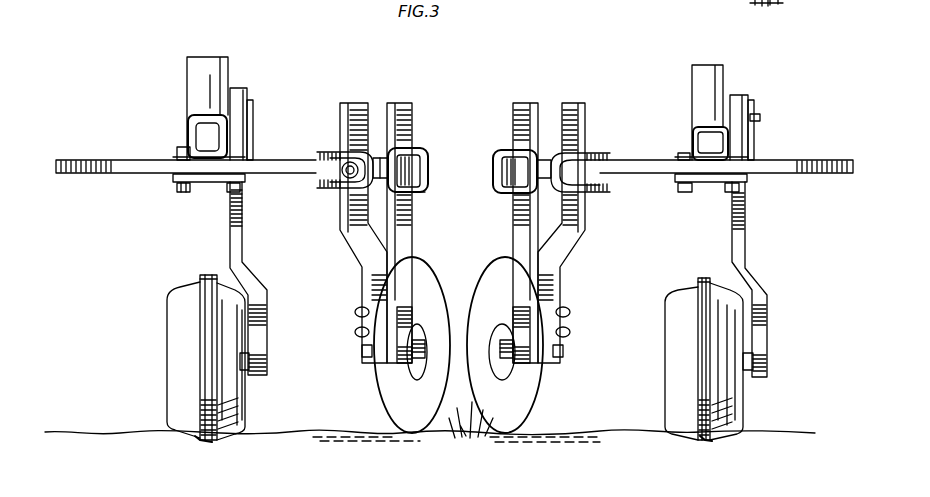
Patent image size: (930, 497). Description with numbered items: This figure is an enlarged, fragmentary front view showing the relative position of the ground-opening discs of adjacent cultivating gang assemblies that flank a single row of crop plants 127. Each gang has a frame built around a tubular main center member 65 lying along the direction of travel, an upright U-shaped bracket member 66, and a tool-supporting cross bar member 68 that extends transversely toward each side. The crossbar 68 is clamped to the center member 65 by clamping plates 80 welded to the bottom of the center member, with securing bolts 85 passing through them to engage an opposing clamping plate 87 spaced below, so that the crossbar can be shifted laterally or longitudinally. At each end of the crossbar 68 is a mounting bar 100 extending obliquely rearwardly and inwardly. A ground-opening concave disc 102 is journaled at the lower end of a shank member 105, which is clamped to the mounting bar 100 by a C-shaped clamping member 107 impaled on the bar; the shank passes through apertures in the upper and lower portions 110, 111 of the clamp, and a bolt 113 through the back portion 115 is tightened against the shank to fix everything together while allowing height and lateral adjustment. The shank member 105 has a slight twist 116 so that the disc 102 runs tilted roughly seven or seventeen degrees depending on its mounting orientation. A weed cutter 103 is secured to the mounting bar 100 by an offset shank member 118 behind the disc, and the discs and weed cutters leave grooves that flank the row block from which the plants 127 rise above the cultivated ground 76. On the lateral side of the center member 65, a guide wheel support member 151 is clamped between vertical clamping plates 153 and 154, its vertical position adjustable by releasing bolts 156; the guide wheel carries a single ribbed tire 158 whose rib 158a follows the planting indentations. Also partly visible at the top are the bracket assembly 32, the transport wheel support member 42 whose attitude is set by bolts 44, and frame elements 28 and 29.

The frame member 28 is at (242, 5).
The frame member 29 is at (138, 5).
The bracket assembly 32 is at (678, 1).
The wheel support member 42 is at (770, 6).
The bolts 44 is at (747, 3).
The main center member 65 is at (187, 128).
The U-shaped bracket member 66 is at (226, 67).
The tool-supporting cross bar member 68 is at (103, 178).
The cultivated ground 76 is at (795, 435).
The clamping plates 80 is at (176, 155).
The securing bolts 85 is at (182, 191).
The opposing clamping plate 87 is at (201, 183).
The mounting bar 100 is at (494, 188).
The ground-opening concave disc 102 is at (528, 396).
The weed cutter 103 is at (316, 440).
The shank member 105 is at (413, 233).
The C-shaped clamping member 107 is at (322, 193).
The upper portion of clamping member 110 is at (407, 152).
The lower portion of clamping member 111 is at (420, 191).
The bolt 113 is at (348, 180).
The back portion of clamping member 115 is at (382, 156).
The twist 116 is at (418, 305).
The offset shank member 118 is at (345, 122).
The plants 127 is at (471, 440).
The guide wheel support member 151 is at (239, 94).
The clamping plate 153 is at (737, 118).
The clamping plate 154 is at (252, 138).
The bolts 156 is at (760, 118).
The single ribbed tire 158 is at (178, 330).
The rib 158a is at (201, 441).